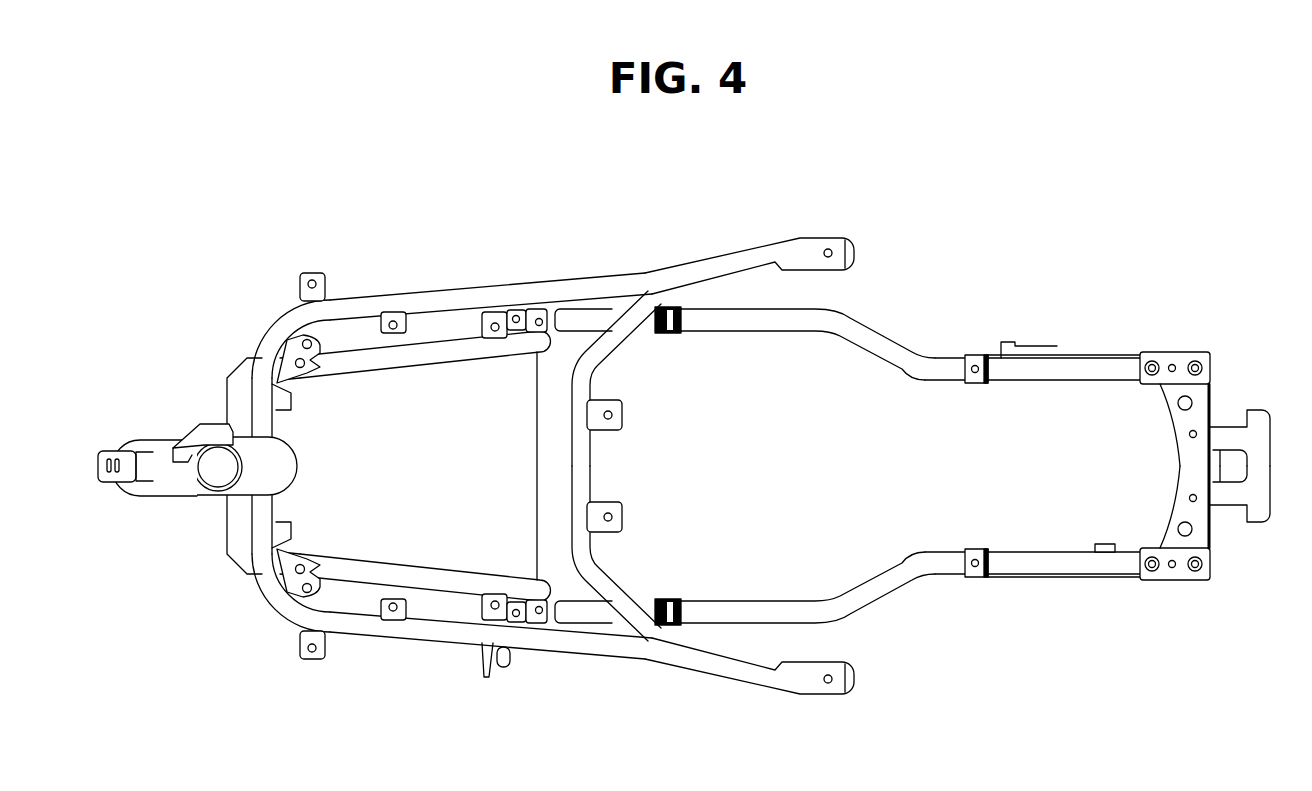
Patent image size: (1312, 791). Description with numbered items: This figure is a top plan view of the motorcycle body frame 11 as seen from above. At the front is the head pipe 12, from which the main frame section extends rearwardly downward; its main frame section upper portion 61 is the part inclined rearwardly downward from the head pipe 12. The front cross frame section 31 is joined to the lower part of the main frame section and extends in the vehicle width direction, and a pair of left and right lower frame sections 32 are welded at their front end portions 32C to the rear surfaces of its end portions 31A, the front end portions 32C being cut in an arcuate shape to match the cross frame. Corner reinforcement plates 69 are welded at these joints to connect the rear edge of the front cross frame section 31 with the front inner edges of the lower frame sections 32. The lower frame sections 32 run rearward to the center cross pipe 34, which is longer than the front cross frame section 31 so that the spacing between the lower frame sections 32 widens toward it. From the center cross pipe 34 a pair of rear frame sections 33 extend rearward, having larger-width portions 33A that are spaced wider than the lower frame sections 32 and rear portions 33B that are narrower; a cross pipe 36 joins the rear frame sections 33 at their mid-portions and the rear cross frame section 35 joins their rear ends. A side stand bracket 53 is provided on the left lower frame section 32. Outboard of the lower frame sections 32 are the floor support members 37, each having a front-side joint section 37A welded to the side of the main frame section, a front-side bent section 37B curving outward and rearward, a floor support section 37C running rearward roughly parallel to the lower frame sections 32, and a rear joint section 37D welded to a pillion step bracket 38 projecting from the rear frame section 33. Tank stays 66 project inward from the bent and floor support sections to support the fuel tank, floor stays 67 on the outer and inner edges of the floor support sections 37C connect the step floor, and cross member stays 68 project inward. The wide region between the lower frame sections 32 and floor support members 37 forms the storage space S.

The body frame 11 is at (701, 439).
The head pipe 12 is at (167, 440).
The front cross frame section 31 is at (216, 480).
The end portions of front cross frame section 31A is at (243, 373).
The lower frame section 32 is at (366, 479).
The front end portion of lower frame section 32C is at (272, 368).
The rear frame section 33 is at (882, 452).
The larger-width portion 33A is at (762, 326).
The rear portion of rear frame section 33B is at (1080, 357).
The center cross pipe 34 is at (537, 423).
The rear cross frame section 35 is at (1198, 420).
The cross pipe 36 is at (586, 456).
The floor support member 37 is at (487, 467).
The front-side joint section 37A is at (255, 408).
The front-side bent section 37B is at (283, 325).
The floor support section 37C is at (480, 278).
The rear joint section 37D is at (714, 283).
The pillion step bracket 38 is at (667, 280).
The side stand bracket 53 is at (483, 677).
The main frame section upper portion 61 is at (289, 463).
The tank stay 66 is at (310, 363).
The floor stay 67 is at (316, 272).
The cross member stay 68 is at (398, 333).
The corner reinforcement plate 69 is at (290, 397).
The storage space S is at (362, 392).